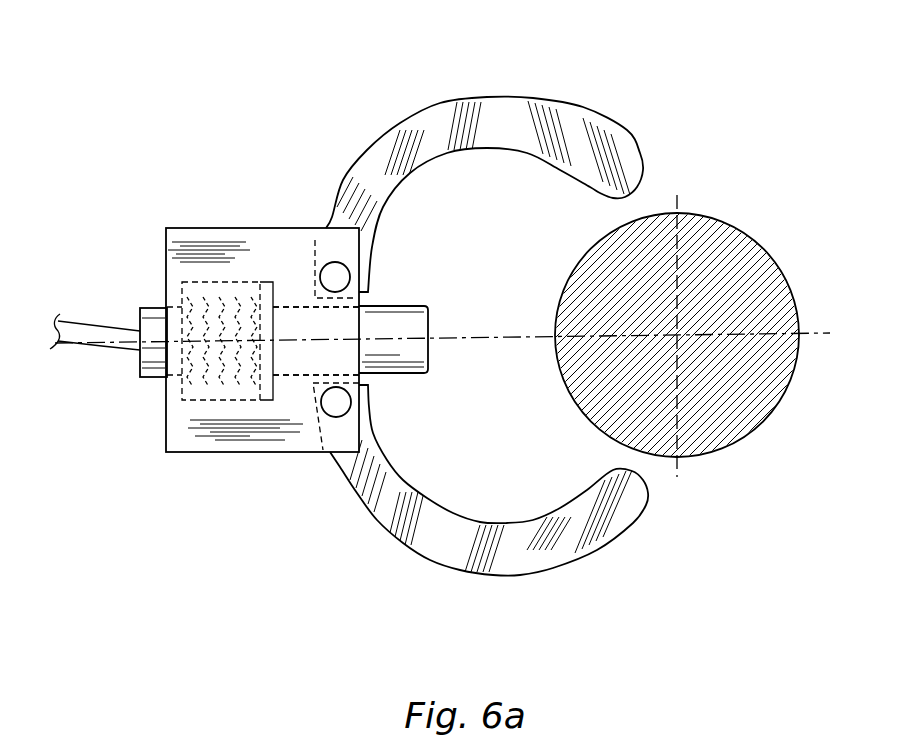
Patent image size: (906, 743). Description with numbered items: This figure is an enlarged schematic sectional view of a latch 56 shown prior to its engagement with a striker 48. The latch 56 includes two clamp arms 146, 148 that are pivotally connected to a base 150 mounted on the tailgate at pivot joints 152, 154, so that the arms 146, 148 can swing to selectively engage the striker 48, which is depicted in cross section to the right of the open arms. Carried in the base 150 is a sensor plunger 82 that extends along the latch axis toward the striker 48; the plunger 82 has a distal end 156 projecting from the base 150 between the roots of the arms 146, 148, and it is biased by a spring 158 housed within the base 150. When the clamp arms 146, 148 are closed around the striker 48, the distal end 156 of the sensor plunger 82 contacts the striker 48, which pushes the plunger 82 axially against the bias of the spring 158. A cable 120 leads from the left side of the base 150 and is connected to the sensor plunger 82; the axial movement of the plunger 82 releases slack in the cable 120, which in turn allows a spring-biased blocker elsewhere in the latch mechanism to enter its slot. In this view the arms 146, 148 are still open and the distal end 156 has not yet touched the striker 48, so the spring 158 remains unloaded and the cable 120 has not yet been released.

The latch 56 is at (368, 113).
The clamp arm 146 is at (497, 120).
The clamp arm 148 is at (500, 553).
The base 150 is at (187, 453).
The pivot joint 152 is at (333, 272).
The pivot joint 154 is at (335, 408).
The distal end 156 is at (430, 327).
The spring 158 is at (202, 282).
The sensor plunger 82 is at (300, 303).
The cable 120 is at (108, 353).
The striker 48 is at (740, 394).